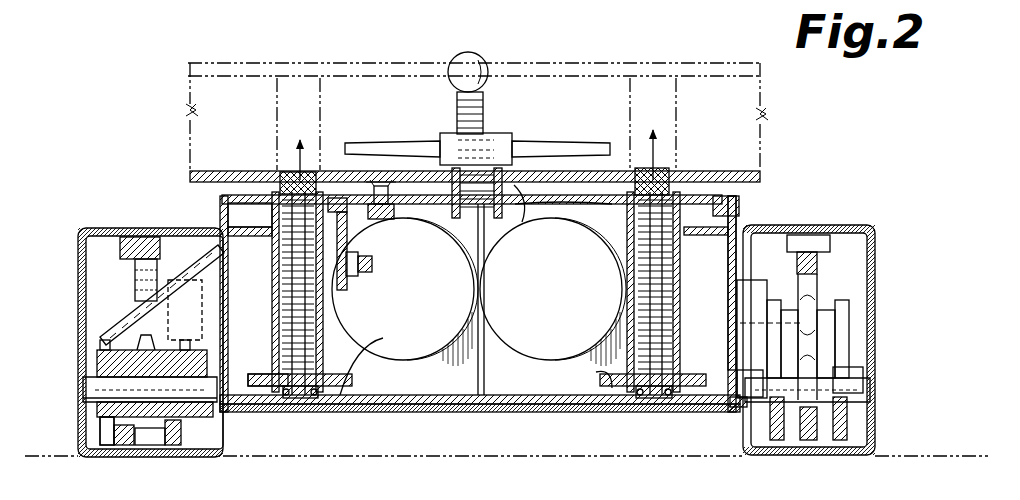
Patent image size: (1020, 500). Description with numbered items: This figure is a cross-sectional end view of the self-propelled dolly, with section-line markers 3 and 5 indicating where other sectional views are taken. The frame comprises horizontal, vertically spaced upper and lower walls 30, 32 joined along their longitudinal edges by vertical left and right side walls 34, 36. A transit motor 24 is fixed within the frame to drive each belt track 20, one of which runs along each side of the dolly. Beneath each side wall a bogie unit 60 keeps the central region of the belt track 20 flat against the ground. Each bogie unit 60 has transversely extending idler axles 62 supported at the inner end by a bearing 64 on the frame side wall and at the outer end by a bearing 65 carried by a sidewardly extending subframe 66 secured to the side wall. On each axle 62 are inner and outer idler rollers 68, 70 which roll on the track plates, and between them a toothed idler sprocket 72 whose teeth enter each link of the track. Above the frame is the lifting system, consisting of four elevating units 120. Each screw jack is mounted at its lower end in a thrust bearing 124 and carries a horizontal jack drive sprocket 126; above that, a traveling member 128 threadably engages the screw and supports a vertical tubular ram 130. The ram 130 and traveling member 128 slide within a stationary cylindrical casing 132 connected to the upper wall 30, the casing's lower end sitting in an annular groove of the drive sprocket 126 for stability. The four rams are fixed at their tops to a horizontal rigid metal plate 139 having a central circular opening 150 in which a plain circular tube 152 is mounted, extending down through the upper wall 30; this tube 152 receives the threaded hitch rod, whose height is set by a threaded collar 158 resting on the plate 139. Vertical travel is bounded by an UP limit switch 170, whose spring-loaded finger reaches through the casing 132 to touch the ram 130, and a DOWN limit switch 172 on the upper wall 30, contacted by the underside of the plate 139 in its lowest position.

The belt track 20 is at (476, 323).
The transit motor 24 is at (479, 292).
The upper wall 30 is at (605, 204).
The lower wall 32 is at (420, 412).
The left side wall 34 is at (230, 292).
The right side wall 36 is at (727, 300).
The bogie unit 60 is at (95, 302).
The idler axle 62 is at (95, 385).
The bearing 64 is at (740, 407).
The bearing 65 is at (95, 410).
The subframe 66 is at (128, 310).
The inner idler roller 68 is at (185, 435).
The outer idler roller 70 is at (105, 440).
The toothed idler sprocket 72 is at (125, 355).
The elevating unit 120 is at (284, 272).
The thrust bearing 124 is at (318, 432).
The jack drive sprocket 126 is at (476, 362).
The traveling member 128 is at (275, 378).
The tubular ram 130 is at (278, 178).
The cylindrical casing 132 is at (348, 232).
The rigid metal plate 139 is at (208, 170).
The circular opening 150 is at (500, 140).
The circular tube 152 is at (541, 214).
The threaded collar 158 is at (378, 143).
The UP limit switch 170 is at (362, 265).
The DOWN limit switch 172 is at (393, 210).
The section line 3 is at (108, 330).
The section line 5 is at (118, 190).